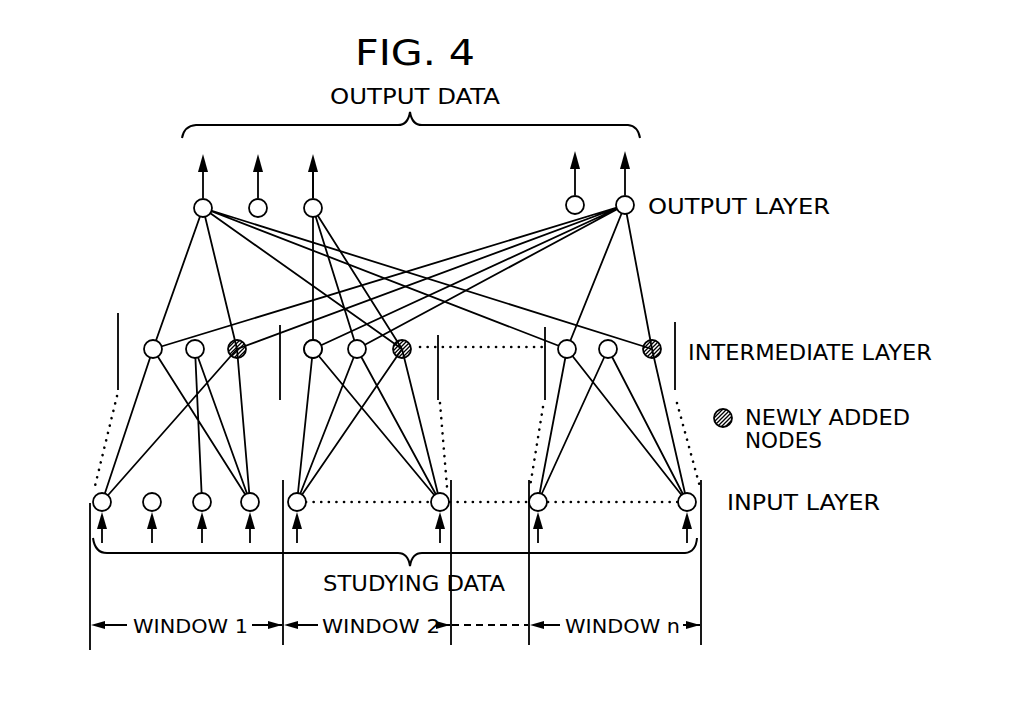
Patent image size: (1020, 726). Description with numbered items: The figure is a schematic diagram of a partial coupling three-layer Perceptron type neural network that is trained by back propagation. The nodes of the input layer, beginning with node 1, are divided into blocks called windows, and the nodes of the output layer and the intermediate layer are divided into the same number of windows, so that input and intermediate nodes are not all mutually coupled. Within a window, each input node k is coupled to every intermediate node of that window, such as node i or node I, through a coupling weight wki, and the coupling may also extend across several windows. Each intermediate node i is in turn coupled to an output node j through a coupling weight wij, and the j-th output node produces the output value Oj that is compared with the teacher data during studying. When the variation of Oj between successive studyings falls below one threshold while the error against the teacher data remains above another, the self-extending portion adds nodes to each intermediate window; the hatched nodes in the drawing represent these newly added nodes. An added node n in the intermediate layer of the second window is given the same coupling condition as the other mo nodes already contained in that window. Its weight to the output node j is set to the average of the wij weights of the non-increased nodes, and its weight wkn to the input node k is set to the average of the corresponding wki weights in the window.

The first node 1 is at (194, 209).
The j-th node of the output layer j is at (305, 200).
The output value of the j-th node of the output layer Oj is at (333, 173).
The coupling weight between intermediate node i and output node j wij is at (326, 238).
The other nodes of m0 number in the intermediate layer window mo is at (375, 334).
The increased node n of the intermediate layer n is at (406, 338).
The node i of the intermediate layer i is at (314, 358).
The coupling weight between input node k and increased node n wkn is at (408, 358).
The coupling weight between input node k and intermediate node i wki is at (327, 428).
The node k of the input layer k is at (306, 506).
The intermediate layer node I is at (608, 340).